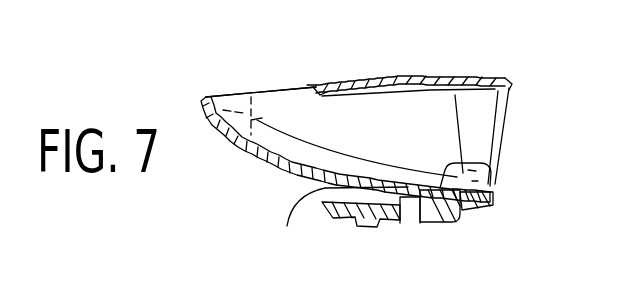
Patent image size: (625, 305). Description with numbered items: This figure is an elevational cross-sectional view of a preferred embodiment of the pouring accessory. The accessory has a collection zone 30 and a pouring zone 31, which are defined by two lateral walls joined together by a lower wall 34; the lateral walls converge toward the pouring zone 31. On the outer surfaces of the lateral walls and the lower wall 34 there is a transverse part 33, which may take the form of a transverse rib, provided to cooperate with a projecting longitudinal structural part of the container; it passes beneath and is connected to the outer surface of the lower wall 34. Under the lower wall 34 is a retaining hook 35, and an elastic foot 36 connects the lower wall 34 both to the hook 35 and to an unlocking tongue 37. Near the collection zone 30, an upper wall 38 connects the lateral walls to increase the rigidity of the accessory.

The collection zone 30 is at (490, 163).
The pouring zone 31 is at (273, 97).
The transverse part 33 is at (432, 223).
The lower wall 34 is at (292, 168).
The retaining hook 35 is at (404, 224).
The elastic foot 36 is at (335, 219).
The unlocking tongue 37 is at (328, 216).
The upper wall 38 is at (385, 75).